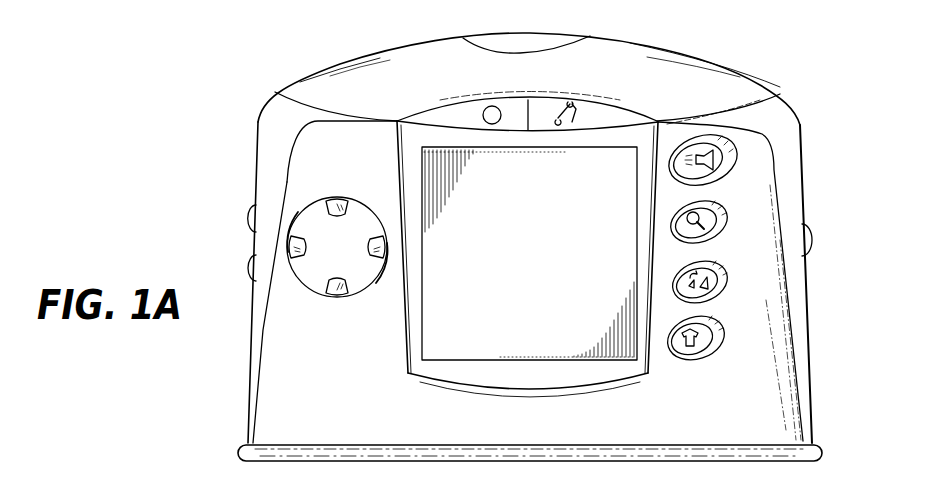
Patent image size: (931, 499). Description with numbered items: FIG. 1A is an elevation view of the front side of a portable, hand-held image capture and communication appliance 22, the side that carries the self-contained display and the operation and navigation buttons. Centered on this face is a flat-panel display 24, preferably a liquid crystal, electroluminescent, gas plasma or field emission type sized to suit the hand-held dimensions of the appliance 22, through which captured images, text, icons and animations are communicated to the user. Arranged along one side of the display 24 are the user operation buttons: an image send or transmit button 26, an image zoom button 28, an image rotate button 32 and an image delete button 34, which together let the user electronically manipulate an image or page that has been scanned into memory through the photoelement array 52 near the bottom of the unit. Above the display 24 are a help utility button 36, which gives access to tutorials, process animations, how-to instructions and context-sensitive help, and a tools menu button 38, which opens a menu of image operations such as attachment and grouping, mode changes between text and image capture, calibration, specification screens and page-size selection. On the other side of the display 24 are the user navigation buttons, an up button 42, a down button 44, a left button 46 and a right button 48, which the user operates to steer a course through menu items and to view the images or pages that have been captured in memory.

The image capture and communication appliance 22 is at (727, 30).
The flat-panel display 24 is at (457, 207).
The image send button 26 is at (720, 159).
The image zoom button 28 is at (710, 223).
The image rotate button 32 is at (710, 282).
The image delete button 34 is at (705, 335).
The help utility button 36 is at (490, 106).
The tools menu button 38 is at (563, 112).
The up button 42 is at (330, 204).
The down button 44 is at (331, 292).
The left button 46 is at (292, 247).
The right button 48 is at (374, 252).
The photoelement array 52 is at (285, 453).